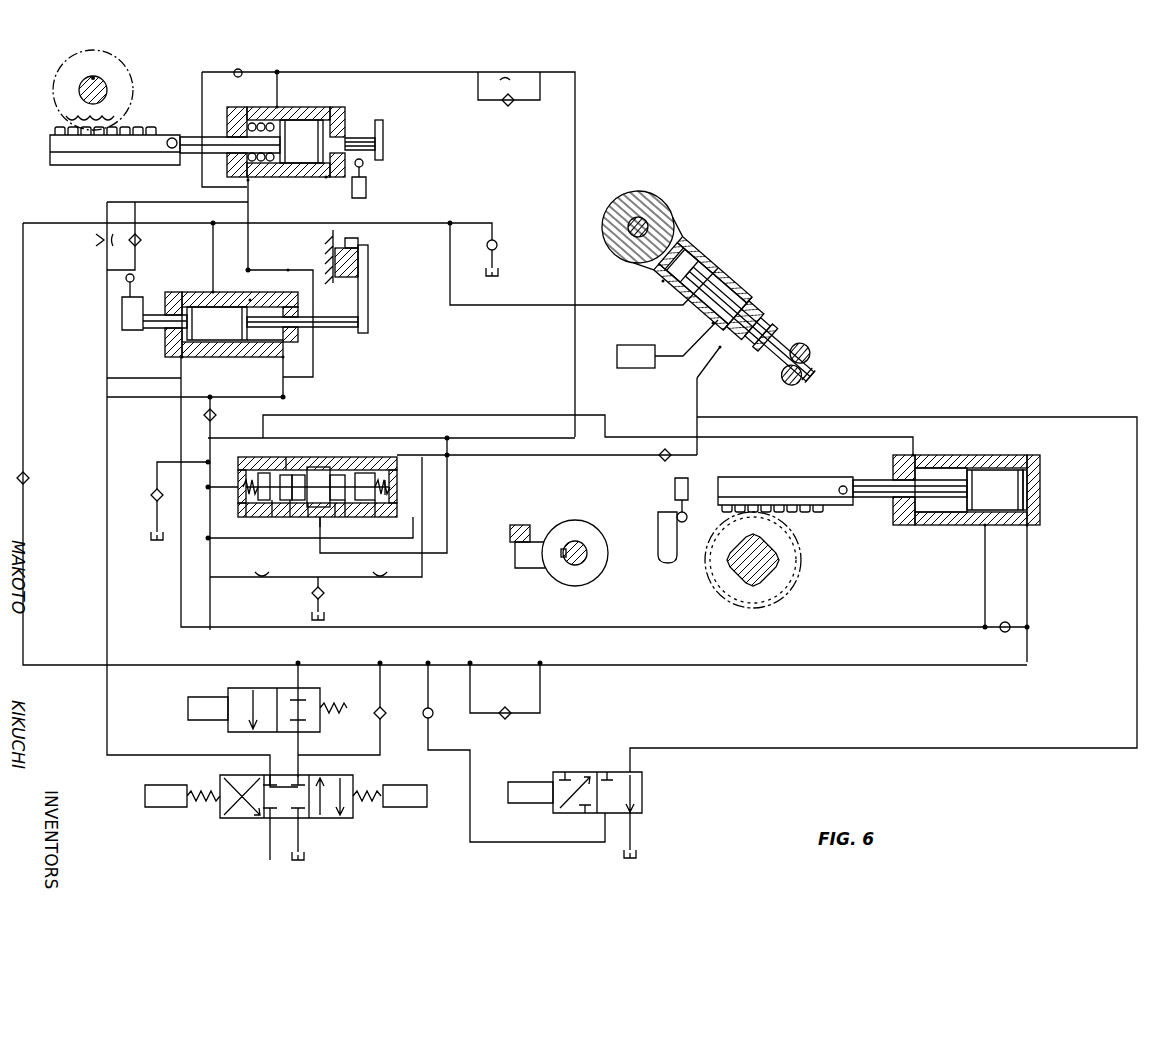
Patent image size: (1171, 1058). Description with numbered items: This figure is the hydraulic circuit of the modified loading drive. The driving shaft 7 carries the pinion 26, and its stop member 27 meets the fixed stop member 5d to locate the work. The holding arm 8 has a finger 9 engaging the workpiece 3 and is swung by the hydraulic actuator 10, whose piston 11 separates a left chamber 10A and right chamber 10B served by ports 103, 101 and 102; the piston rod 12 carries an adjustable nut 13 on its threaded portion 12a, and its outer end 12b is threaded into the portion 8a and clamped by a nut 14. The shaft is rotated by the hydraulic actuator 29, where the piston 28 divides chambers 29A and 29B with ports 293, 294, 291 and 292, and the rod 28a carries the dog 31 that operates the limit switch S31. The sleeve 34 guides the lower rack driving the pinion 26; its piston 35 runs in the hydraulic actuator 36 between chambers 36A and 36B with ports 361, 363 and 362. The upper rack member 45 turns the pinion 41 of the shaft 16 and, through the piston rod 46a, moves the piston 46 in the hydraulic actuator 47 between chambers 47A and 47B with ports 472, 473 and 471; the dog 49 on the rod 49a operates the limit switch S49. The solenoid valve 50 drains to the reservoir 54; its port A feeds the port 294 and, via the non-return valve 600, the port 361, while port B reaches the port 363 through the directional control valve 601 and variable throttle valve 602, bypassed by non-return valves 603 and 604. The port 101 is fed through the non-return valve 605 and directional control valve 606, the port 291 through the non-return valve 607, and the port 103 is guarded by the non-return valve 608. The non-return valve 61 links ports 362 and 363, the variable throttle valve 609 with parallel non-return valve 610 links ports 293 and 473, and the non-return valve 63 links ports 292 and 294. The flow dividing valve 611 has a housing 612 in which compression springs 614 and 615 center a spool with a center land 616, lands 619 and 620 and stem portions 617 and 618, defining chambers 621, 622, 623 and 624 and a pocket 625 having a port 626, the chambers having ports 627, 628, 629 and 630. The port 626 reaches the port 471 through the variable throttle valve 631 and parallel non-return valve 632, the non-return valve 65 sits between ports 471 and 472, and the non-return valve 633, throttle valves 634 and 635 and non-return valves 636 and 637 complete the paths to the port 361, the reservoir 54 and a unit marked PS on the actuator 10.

The workpiece 3 is at (359, 242).
The stop member 5d is at (520, 524).
The driving shaft 7 is at (646, 222).
The holding arm 8 is at (369, 280).
The portion rotatably extended from the root of the holding arm 8a is at (812, 356).
The finger 9 is at (359, 256).
The hydraulic actuator 10 is at (723, 266).
The left chamber 10A is at (688, 258).
The right chamber 10B is at (735, 292).
The piston 11 is at (700, 262).
The piston rod 12 is at (756, 300).
The threaded portion 12a is at (790, 346).
The outer end of the piston rod 12b is at (796, 386).
The adjustable nut 13 is at (778, 326).
The nut 14 is at (812, 376).
The shaft 16 is at (100, 86).
The pinion 26 is at (797, 516).
The stop member 27 is at (559, 547).
The piston 28 is at (220, 333).
The piston rod 28a is at (292, 332).
The hydraulic actuator 29 is at (210, 331).
The left chamber 29A is at (160, 344).
The right chamber 29B is at (265, 344).
The dog 31 is at (122, 312).
The sleeve 34 is at (770, 478).
The piston 35 is at (1008, 470).
The hydraulic actuator 36 is at (991, 491).
The left chamber 36A is at (938, 510).
The right chamber 36B is at (1030, 474).
The pinion 41 is at (62, 121).
The upper rack member 45 is at (62, 140).
The piston 46 is at (301, 141).
The piston rod 46a is at (205, 137).
The hydraulic actuator 47 is at (306, 130).
The left chamber 47A is at (260, 107).
The right chamber 47B is at (333, 107).
The dog 49 is at (376, 144).
The rod 49a is at (378, 122).
The three-position four-way selector solenoid valve 50 is at (376, 849).
The reservoir 54 is at (498, 272).
The non-return valve 61 is at (1003, 622).
The non-return valve 63 is at (292, 264).
The non-return valve 65 is at (238, 69).
The port 101 is at (728, 348).
The port 102 is at (712, 324).
The port 103 is at (663, 283).
The port 291 is at (212, 291).
The port 292 is at (250, 300).
The port 293 is at (184, 358).
The port 294 is at (290, 352).
The port 361 is at (914, 454).
The port 362 is at (985, 527).
The port 363 is at (1029, 527).
The port 471 is at (279, 106).
The port 472 is at (249, 183).
The port 473 is at (326, 178).
The non-return valve 600 is at (216, 416).
The directional control valve 601 is at (327, 695).
The variable throttle valve 602 is at (508, 672).
The non-return valve 603 is at (386, 710).
The non-return valve 604 is at (508, 718).
The non-return valve 605 is at (433, 716).
The directional control valve 606 is at (650, 789).
The non-return valve 607 is at (30, 478).
The non-return valve 608 is at (495, 240).
The variable throttle valve 609 is at (97, 243).
The non-return valve 610 is at (141, 241).
The flow dividing valve 611 is at (305, 495).
The housing 612 is at (246, 512).
The compression spring 614 is at (262, 501).
The compression spring 615 is at (376, 508).
The center land 616 is at (309, 508).
The small-stem portion 617 is at (276, 503).
The small-stem portion 618 is at (321, 528).
The land 619 is at (288, 456).
The land 620 is at (346, 505).
The chamber 621 is at (297, 472).
The chamber 622 is at (362, 472).
The chamber 623 is at (282, 472).
The chamber 624 is at (388, 481).
The pocket 625 is at (320, 466).
The port 626 is at (336, 472).
The port 627 is at (290, 507).
The port 628 is at (336, 518).
The port 629 is at (243, 481).
The port 630 is at (390, 492).
The variable throttle valve 631 is at (511, 63).
The non-return valve 632 is at (508, 106).
The non-return valve 633 is at (670, 458).
The throttle valve 634 is at (262, 582).
The throttle valve 635 is at (374, 582).
The non-return valve 636 is at (154, 490).
The non-return valve 637 is at (324, 593).
The pressure switch PS is at (636, 356).
The limit switch S31 is at (126, 279).
The limit switch S49 is at (367, 190).